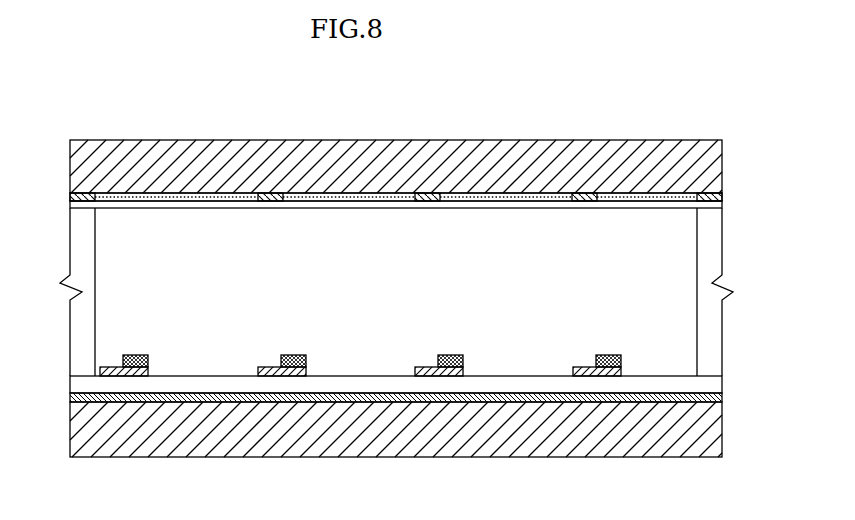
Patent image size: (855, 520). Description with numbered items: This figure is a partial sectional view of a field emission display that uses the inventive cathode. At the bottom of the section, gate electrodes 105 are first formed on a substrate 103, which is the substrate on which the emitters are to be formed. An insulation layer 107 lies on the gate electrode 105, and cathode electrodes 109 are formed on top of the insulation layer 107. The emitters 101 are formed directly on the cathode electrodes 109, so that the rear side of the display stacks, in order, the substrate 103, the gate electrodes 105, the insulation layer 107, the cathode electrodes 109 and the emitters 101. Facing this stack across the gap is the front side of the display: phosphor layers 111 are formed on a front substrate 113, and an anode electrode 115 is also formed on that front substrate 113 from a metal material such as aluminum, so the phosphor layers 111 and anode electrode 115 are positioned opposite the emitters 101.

The emitter 101 is at (305, 362).
The substrate 103 is at (150, 452).
The gate electrode 105 is at (137, 402).
The insulation layer 107 is at (500, 388).
The cathode electrode 109 is at (268, 370).
The phosphor layer 111 is at (365, 200).
The front substrate 113 is at (282, 150).
The anode electrode 115 is at (542, 208).